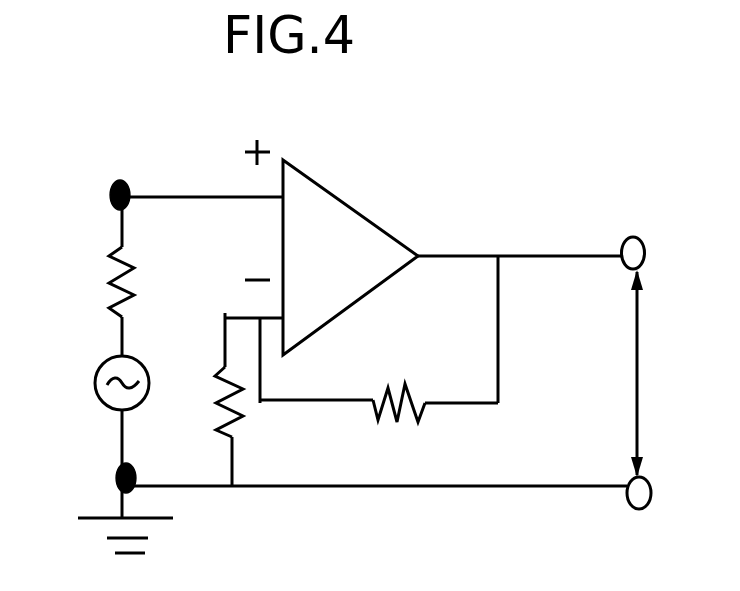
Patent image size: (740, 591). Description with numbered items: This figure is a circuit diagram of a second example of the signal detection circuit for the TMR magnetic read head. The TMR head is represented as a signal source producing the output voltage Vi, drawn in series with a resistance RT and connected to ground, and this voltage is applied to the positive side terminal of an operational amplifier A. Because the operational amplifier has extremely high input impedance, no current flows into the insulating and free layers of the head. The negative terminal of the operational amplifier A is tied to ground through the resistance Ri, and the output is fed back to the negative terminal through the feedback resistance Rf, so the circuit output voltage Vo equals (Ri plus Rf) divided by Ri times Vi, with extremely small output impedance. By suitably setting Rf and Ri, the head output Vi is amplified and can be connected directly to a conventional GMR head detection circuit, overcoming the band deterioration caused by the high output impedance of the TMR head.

The input resistor RT is at (88, 282).
The output voltage from the TMR head Vi is at (102, 383).
The resistance Ri is at (211, 399).
The resistance Rf is at (399, 380).
The operational amplifier A is at (350, 257).
The output voltage Vo is at (661, 373).